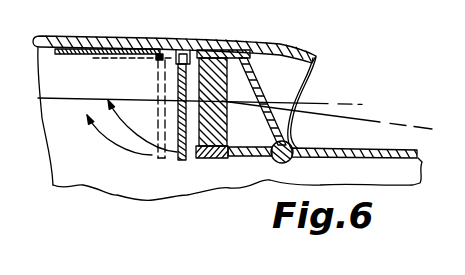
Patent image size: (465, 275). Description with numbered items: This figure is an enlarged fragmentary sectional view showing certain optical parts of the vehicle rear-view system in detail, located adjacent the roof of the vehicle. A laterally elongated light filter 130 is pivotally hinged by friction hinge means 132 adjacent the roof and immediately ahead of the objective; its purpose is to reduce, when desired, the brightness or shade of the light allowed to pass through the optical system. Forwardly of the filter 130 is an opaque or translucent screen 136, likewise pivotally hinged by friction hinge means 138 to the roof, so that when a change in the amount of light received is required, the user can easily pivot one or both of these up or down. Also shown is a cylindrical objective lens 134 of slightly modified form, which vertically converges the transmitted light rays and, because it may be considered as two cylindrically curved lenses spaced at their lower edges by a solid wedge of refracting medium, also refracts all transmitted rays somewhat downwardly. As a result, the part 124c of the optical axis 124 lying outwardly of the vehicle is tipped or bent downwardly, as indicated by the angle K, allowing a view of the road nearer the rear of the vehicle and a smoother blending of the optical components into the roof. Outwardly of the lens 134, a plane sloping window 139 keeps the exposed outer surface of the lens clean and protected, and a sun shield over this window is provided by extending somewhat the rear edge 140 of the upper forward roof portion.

The optical axis 124 is at (127, 97).
The part of the optical axis 124c is at (384, 118).
The light filter 130 is at (176, 160).
The friction hinge means 132 is at (191, 56).
The cylindrical objective lens 134 is at (220, 147).
The screen 136 is at (62, 54).
The friction hinge means 138 is at (159, 53).
The plane sloping window 139 is at (250, 64).
The rear edge of the upper forward roof portion 140 is at (316, 56).
The angle K is at (320, 106).